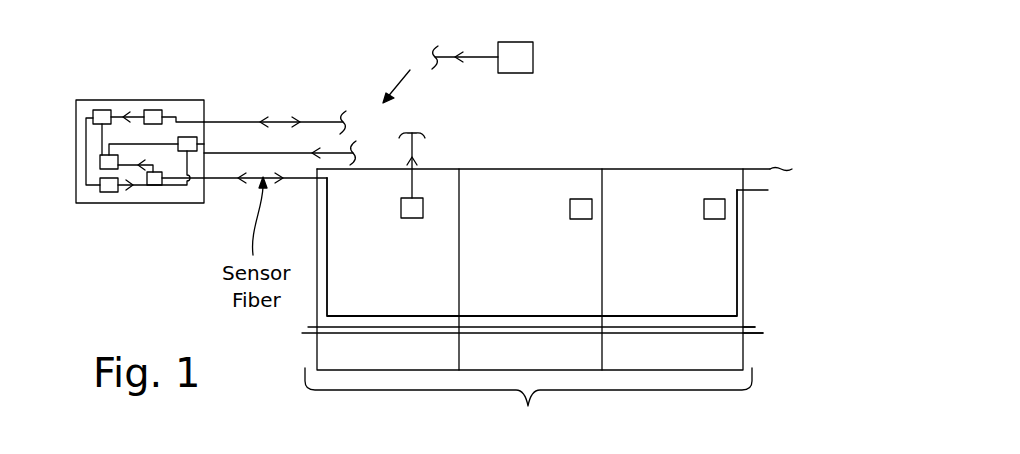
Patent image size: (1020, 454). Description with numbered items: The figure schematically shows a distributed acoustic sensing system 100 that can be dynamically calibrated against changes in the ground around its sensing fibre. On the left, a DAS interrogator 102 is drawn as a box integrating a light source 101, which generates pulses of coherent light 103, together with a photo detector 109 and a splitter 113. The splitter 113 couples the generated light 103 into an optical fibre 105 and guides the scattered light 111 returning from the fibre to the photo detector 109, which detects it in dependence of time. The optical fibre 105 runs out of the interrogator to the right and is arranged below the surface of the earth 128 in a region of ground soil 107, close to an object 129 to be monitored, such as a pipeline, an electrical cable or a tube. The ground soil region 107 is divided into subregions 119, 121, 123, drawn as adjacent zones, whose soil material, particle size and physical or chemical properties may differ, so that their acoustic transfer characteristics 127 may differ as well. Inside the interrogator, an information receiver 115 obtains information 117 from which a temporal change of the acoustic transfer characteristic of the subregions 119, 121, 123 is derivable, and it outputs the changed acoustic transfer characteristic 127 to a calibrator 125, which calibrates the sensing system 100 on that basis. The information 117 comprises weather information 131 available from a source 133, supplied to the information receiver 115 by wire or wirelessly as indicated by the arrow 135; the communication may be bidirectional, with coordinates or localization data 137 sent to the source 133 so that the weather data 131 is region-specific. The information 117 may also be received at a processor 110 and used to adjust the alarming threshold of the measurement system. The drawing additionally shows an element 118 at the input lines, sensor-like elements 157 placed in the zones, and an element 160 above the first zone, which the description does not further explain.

The distributed acoustic sensing system 100 is at (700, 77).
The light source 101 is at (105, 193).
The DAS interrogator 102 is at (76, 175).
The pulses of coherent light 103 is at (133, 188).
The optical fibre 105 is at (327, 298).
The ground soil region 107 is at (536, 303).
The photo detector 109 is at (100, 159).
The processor 110 is at (205, 144).
The scattered light 111 is at (140, 165).
The splitter 113 is at (155, 186).
The information receiver 115 is at (152, 110).
The information 117 is at (261, 122).
The input signal 118 is at (314, 151).
The subregion 119 is at (420, 270).
The subregion 121 is at (552, 270).
The subregion 123 is at (688, 270).
The calibrator 125 is at (100, 110).
The changed acoustic transfer characteristic 127 is at (125, 115).
The surface of the earth 128 is at (765, 169).
The object to be monitored 129 is at (746, 334).
The weather information 131 is at (457, 55).
The weather information source 133 is at (533, 57).
The arrow 135 is at (398, 83).
The coordinates or localization data 137 is at (298, 121).
The temperature sensor 157 is at (401, 203).
The wireless sensor antenna 160 is at (413, 160).